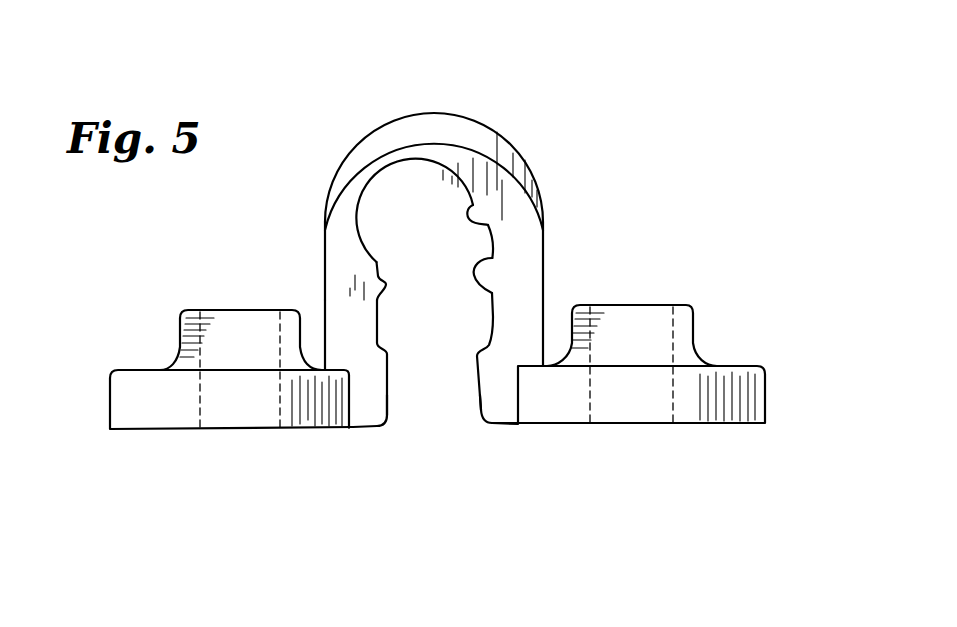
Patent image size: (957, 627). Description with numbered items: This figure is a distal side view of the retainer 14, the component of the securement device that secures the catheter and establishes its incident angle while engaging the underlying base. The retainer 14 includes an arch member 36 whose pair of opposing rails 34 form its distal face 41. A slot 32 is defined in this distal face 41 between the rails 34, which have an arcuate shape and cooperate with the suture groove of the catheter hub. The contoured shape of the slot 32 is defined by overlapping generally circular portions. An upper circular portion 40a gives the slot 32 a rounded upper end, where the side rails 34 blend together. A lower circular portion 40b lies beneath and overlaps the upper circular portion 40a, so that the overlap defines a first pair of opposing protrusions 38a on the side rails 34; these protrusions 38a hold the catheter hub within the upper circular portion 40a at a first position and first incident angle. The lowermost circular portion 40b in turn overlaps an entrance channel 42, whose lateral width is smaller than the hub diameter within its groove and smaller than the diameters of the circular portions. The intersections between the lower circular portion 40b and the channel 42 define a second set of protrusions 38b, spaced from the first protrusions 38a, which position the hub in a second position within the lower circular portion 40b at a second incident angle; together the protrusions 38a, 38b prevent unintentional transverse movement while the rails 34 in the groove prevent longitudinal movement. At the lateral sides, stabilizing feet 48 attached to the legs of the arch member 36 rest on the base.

The retainer 14 is at (563, 126).
The slot 32 is at (420, 223).
The rails 34 is at (486, 200).
The arch member 36 is at (470, 124).
The first pair of opposing protrusions 38a is at (492, 259).
The second set of protrusions 38b is at (470, 353).
The upper circular portion 40a is at (385, 212).
The lower circular portion 40b is at (378, 318).
The distal face 41 is at (518, 287).
The entrance channel 42 is at (427, 415).
The feet 48 is at (160, 415).